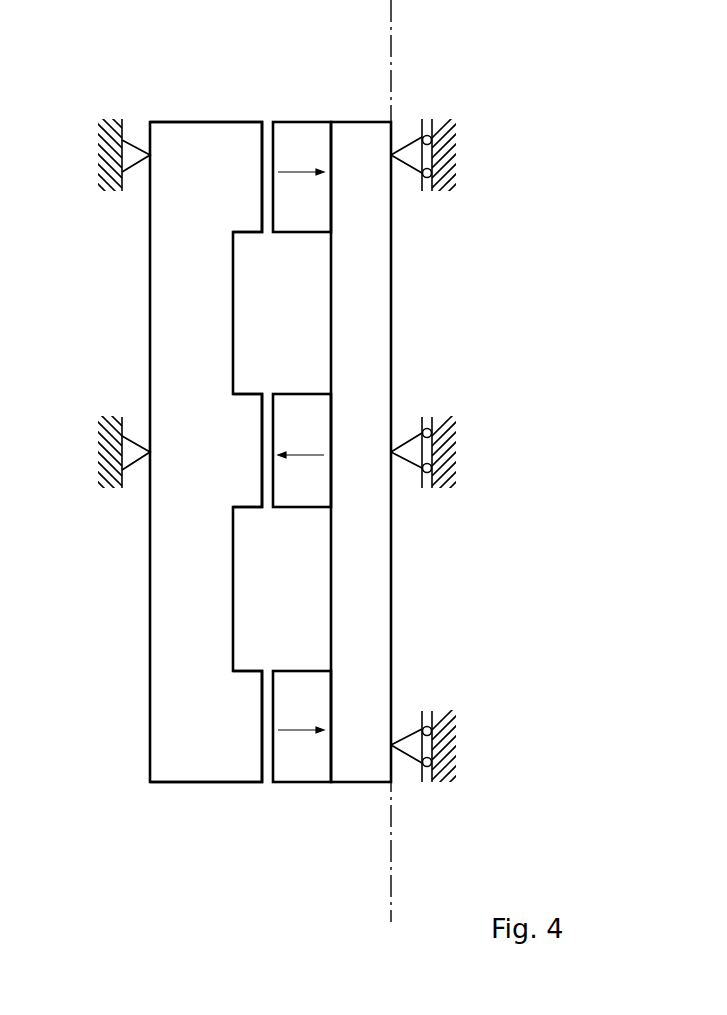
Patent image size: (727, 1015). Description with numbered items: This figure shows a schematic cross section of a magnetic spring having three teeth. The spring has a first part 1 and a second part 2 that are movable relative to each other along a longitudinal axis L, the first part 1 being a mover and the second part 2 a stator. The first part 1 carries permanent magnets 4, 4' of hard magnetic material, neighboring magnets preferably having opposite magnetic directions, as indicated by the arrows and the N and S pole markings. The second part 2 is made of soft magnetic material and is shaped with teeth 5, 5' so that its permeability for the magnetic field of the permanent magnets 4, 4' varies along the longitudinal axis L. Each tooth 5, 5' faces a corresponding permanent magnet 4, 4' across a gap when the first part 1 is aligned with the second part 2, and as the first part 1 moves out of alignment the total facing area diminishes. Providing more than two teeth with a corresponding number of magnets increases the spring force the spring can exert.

The first part 1 is at (348, 797).
The second part 2 is at (194, 797).
The permanent magnet 4 is at (302, 772).
The permanent magnet 4' is at (386, 450).
The tooth 5 is at (206, 772).
The tooth 5' is at (154, 450).
The longitudinal axis L is at (393, 861).